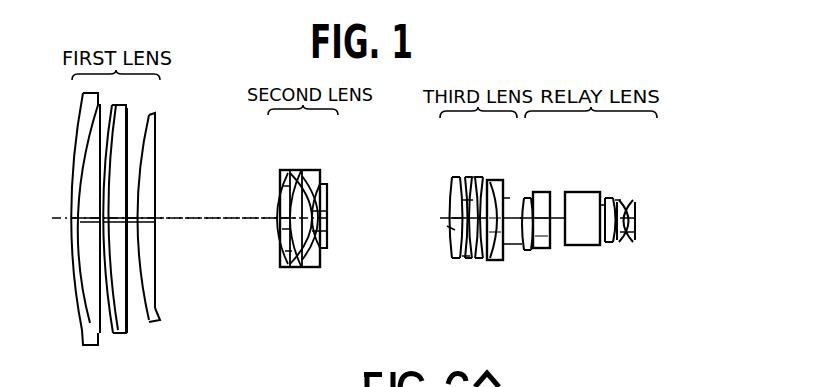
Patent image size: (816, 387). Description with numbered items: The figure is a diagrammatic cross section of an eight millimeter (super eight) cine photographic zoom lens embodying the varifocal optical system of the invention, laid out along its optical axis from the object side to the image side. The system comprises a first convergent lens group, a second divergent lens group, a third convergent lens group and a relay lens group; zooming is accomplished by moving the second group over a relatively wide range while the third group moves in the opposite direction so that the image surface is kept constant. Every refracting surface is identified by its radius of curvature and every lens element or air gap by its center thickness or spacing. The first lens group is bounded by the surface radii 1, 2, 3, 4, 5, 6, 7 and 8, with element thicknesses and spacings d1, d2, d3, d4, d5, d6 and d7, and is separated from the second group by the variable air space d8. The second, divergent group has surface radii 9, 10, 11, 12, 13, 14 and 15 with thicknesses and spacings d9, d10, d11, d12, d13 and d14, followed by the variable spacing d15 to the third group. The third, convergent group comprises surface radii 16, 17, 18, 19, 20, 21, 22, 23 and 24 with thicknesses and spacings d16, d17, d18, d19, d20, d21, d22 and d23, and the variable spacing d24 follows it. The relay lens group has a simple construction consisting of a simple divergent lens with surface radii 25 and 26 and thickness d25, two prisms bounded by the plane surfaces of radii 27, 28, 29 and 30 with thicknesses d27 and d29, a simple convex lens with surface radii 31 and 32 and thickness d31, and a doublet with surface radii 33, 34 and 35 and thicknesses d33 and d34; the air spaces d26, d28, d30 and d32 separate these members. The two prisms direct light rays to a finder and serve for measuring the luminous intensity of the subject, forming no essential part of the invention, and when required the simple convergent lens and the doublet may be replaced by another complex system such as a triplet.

The radius of curvature of the first surface 1 is at (76, 324).
The radius of curvature of the second surface 2 is at (96, 328).
The radius of curvature of the third surface 3 is at (86, 353).
The radius of curvature of the fourth surface 4 is at (101, 343).
The radius of curvature of the fifth surface 5 is at (118, 336).
The radius of curvature of the sixth surface 6 is at (128, 334).
The radius of curvature of the seventh surface 7 is at (150, 323).
The radius of curvature of the eighth surface 8 is at (162, 323).
The radius of curvature of the ninth surface 9 is at (281, 254).
The radius of curvature of the tenth surface 10 is at (284, 266).
The radius of curvature of the eleventh surface 11 is at (291, 267).
The radius of curvature of the twelfth surface 12 is at (299, 268).
The radius of curvature of the thirteenth surface 13 is at (306, 268).
The radius of curvature of the fourteenth surface 14 is at (314, 268).
The radius of curvature of the fifteenth surface 15 is at (328, 252).
The radius of curvature of the sixteenth surface 16 is at (450, 260).
The radius of curvature of the seventeenth surface 17 is at (461, 260).
The radius of curvature of the eighteenth surface 18 is at (466, 262).
The radius of curvature of the nineteenth surface 19 is at (472, 262).
The radius of curvature of the twentieth surface 20 is at (478, 262).
The radius of curvature of the twenty-first surface 21 is at (485, 262).
The radius of curvature of the twenty-second surface 22 is at (491, 262).
The radius of curvature of the twenty-third surface 23 is at (498, 262).
The radius of curvature of the twenty-fourth surface 24 is at (505, 262).
The radius of curvature of the twenty-fifth surface 25 is at (523, 252).
The radius of curvature of the twenty-sixth surface 26 is at (532, 252).
The radius of curvature of the twenty-seventh surface 27 is at (538, 249).
The radius of curvature of the twenty-eighth surface 28 is at (550, 249).
The radius of curvature of the twenty-ninth surface 29 is at (566, 247).
The radius of curvature of the thirtieth surface 30 is at (601, 247).
The radius of curvature of the thirty-first surface 31 is at (606, 244).
The radius of curvature of the thirty-second surface 32 is at (615, 244).
The radius of curvature of the thirty-third surface 33 is at (628, 245).
The radius of curvature of the thirty-fourth surface 34 is at (636, 242).
The radius of curvature of the thirty-fifth surface 35 is at (640, 231).
The center thickness of the first lens element d1 is at (72, 222).
The center thickness of the second lens element d2 is at (98, 217).
The air spacing after the first doublet d3 is at (98, 224).
The center thickness of the third lens element d4 is at (122, 217).
The center thickness of the fourth lens element d5 is at (122, 224).
The air spacing after the second doublet d6 is at (148, 224).
The center thickness of the fifth lens element d7 is at (148, 217).
The variable air spacing between first and second lens groups d8 is at (217, 207).
The center thickness of the sixth lens element d9 is at (282, 229).
The air spacing within the second lens group d10 is at (282, 217).
The center thickness of the seventh lens element d11 is at (286, 251).
The air spacing before the second-group doublet d12 is at (283, 188).
The center thickness of the eighth lens element d13 is at (322, 231).
The center thickness of the ninth lens element d14 is at (322, 211).
The variable air spacing between second and third lens groups d15 is at (388, 208).
The center thickness of the tenth lens element d16 is at (456, 227).
The air spacing within the third lens group d17 is at (454, 215).
The center thickness of the eleventh lens element d18 is at (465, 256).
The air spacing within the third lens group d19 is at (472, 201).
The center thickness of the twelfth lens element d20 is at (498, 231).
The air spacing before the third-group doublet d21 is at (480, 180).
The center thickness of the thirteenth lens element d22 is at (498, 212).
The center thickness of the fourteenth lens element d23 is at (506, 198).
The variable air spacing between third lens group and relay lens group d24 is at (516, 211).
The center thickness of the simple divergent lens d25 is at (516, 237).
The air spacing before the first prism d26 is at (544, 237).
The thickness of the first prism d27 is at (544, 211).
The air spacing between the prisms d28 is at (557, 249).
The thickness of the second prism d29 is at (582, 211).
The air spacing after the second prism d30 is at (602, 220).
The center thickness of the simple convex lens d31 is at (609, 197).
The air spacing before the relay doublet d32 is at (620, 199).
The center thickness of the nineteenth lens element d33 is at (630, 229).
The center thickness of the twentieth lens element d34 is at (630, 211).